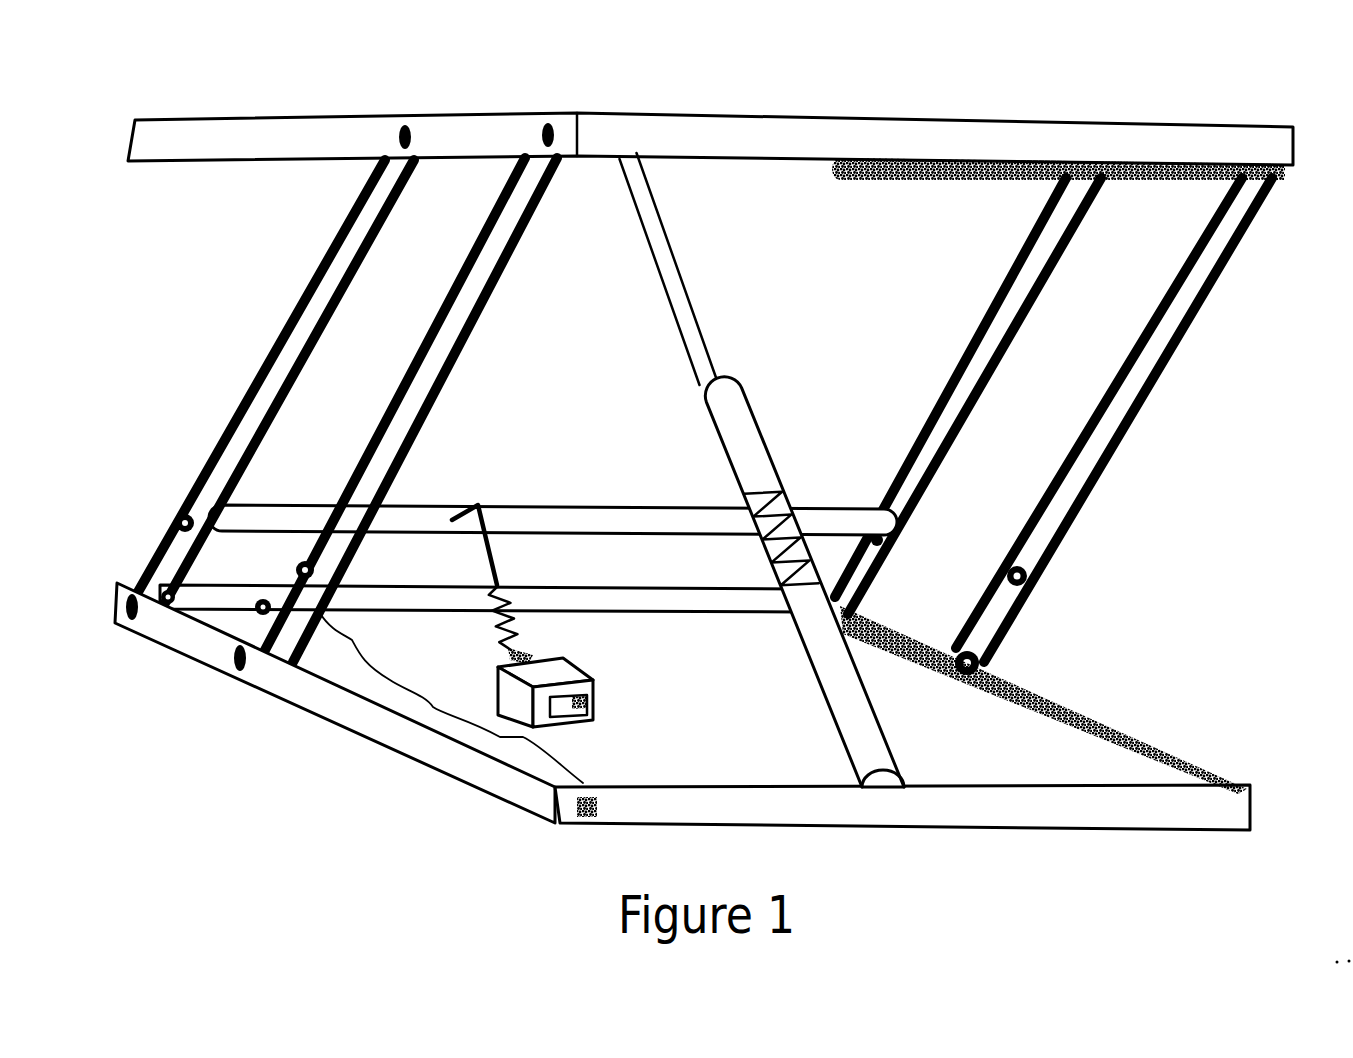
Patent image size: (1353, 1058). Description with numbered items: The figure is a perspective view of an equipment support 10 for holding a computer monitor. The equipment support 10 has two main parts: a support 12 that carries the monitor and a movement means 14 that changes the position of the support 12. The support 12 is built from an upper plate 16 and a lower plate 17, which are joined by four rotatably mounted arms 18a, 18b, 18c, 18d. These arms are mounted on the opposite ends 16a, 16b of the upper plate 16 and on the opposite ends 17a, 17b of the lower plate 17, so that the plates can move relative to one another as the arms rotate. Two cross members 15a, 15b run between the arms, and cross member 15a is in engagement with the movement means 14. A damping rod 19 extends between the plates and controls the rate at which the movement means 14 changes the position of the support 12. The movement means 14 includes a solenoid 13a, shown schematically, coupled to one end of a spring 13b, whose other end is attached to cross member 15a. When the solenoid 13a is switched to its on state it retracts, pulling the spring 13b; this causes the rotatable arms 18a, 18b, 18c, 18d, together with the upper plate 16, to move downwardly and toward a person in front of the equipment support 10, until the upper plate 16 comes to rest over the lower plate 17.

The equipment support 10 is at (145, 323).
The support 12 is at (1292, 263).
The solenoid 13a is at (512, 697).
The spring 13b is at (493, 618).
The movement means 14 is at (588, 654).
The cross member 15a is at (551, 520).
The cross member 15b is at (543, 610).
The upper plate 16 is at (1173, 140).
The end of upper plate 16a is at (237, 138).
The end of upper plate 16b is at (1122, 176).
The lower plate 17 is at (1053, 757).
The end of lower plate 17a is at (345, 712).
The end of lower plate 17b is at (1053, 690).
The rotatably mounted arm 18a is at (327, 286).
The rotatably mounted arm 18b is at (437, 340).
The rotatably mounted arm 18c is at (996, 306).
The rotatably mounted arm 18d is at (1118, 412).
The damping rod 19 is at (740, 405).